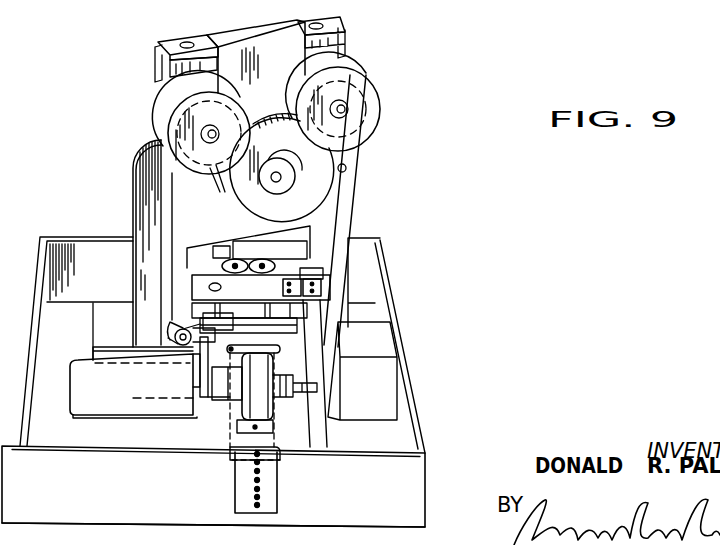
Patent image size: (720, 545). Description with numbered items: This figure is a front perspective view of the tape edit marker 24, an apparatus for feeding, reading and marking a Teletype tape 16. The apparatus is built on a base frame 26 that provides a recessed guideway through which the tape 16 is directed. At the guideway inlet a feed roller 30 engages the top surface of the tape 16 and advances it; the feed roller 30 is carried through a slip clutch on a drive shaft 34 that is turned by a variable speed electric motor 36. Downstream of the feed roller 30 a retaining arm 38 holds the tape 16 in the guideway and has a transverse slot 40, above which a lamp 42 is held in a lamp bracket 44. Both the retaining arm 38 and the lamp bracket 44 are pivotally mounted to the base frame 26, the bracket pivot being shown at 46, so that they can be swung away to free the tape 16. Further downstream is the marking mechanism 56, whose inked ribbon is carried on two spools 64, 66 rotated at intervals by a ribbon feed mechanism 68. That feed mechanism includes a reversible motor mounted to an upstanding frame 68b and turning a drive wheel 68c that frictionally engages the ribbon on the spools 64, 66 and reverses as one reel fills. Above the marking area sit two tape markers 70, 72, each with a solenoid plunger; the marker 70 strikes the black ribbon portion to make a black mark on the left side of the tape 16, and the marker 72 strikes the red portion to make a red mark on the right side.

The tape 16 is at (272, 487).
The tape edit marker 24 is at (428, 368).
The base frame 26 is at (378, 499).
The feed roller 30 is at (235, 428).
The drive shaft 34 is at (223, 393).
The variable speed electric motor 36 is at (111, 407).
The retaining arm 38 is at (287, 358).
The transverse slot 40 is at (230, 349).
The lamp 42 is at (170, 323).
The lamp bracket 44 is at (200, 289).
The pivot mounting 46 is at (320, 288).
The marking mechanism 56 is at (389, 142).
The spool 64 is at (176, 125).
The spool 66 is at (372, 90).
The ribbon feed mechanism 68 is at (358, 198).
The upstanding frame 68b is at (143, 162).
The drive wheel 68c is at (290, 211).
The tape marker 70 is at (278, 268).
The tape marker 72 is at (223, 263).